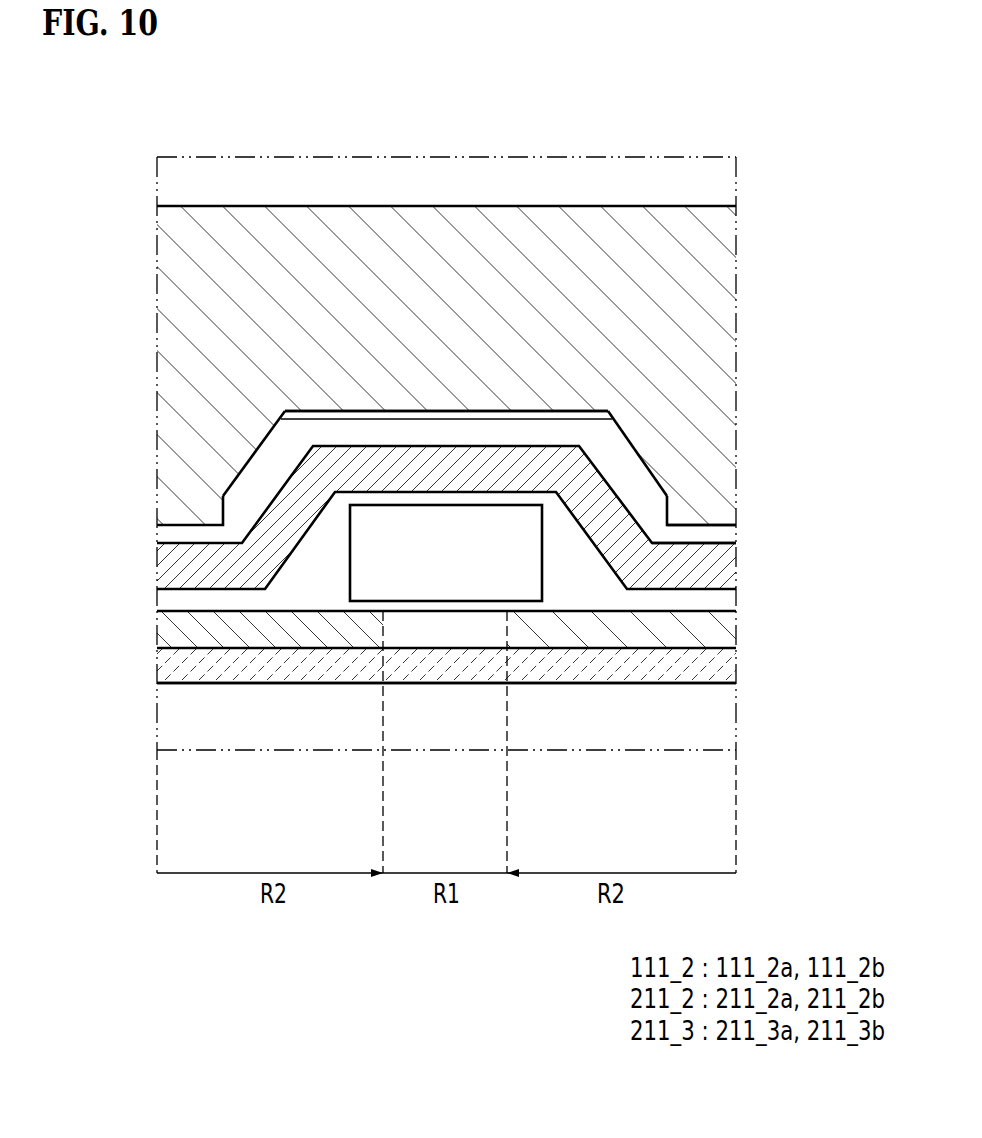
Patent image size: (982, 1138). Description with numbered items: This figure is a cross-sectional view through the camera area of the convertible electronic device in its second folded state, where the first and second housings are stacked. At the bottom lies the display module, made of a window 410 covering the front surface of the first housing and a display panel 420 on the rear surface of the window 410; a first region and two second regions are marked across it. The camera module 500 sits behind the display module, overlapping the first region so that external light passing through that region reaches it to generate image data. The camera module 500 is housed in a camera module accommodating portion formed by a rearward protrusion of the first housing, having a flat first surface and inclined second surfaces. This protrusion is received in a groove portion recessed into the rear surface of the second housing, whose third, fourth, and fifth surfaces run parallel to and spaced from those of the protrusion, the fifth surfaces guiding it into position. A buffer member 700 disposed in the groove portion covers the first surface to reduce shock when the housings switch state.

The window 410 is at (660, 668).
The display panel 420 is at (583, 633).
The camera module 500 is at (445, 585).
The buffer member 700 is at (460, 417).